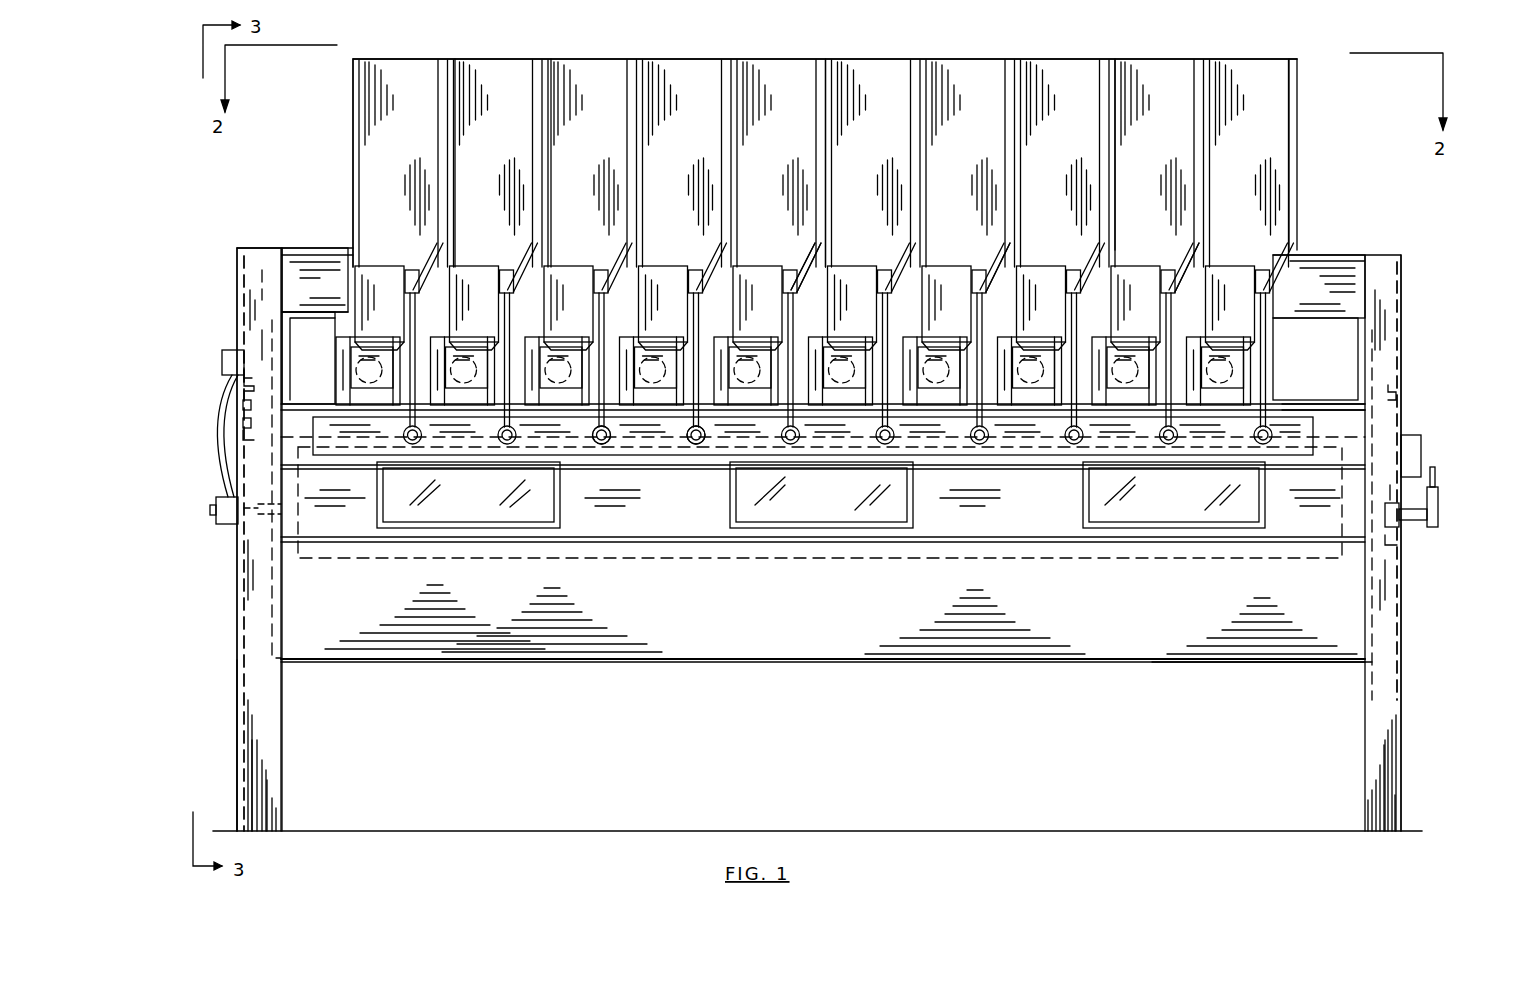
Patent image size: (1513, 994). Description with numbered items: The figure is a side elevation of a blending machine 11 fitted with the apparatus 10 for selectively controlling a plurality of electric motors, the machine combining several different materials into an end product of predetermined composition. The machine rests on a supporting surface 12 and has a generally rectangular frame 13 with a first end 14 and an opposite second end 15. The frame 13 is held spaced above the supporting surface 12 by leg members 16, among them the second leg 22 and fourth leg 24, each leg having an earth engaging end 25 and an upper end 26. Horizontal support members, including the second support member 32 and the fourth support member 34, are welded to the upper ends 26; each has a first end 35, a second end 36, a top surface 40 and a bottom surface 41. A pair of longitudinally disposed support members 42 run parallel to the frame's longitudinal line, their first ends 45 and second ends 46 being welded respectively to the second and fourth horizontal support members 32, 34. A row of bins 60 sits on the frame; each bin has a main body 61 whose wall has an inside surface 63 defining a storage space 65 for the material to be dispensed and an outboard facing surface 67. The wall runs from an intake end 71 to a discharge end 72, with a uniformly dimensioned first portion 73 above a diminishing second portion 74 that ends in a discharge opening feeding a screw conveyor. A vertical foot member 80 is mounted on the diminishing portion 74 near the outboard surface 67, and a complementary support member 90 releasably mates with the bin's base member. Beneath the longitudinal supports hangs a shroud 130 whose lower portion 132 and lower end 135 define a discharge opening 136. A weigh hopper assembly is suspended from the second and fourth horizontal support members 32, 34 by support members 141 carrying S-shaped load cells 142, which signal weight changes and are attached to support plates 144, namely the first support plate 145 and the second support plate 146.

The apparatus for selectively controlling a plurality of electric motors 10 is at (775, 52).
The blending machine 11 is at (222, 355).
The supporting surface 12 is at (750, 830).
The frame 13 is at (270, 235).
The first end 14 is at (239, 289).
The second end 15 is at (1403, 302).
The leg members 16 is at (233, 690).
The second leg 22 is at (258, 728).
The fourth leg 24 is at (1386, 758).
The first or earth engaging end 25 is at (250, 795).
The second or upper end 26 is at (258, 272).
The second support member 32 is at (262, 305).
The fourth support member 34 is at (1403, 324).
The first end 35 is at (1335, 402).
The second end 36 is at (293, 398).
The top surface 40 is at (262, 248).
The bottom surface 41 is at (258, 372).
The longitudinally disposed support members 42 is at (333, 250).
The first end 45 is at (315, 289).
The second end 46 is at (1319, 286).
The bins 60 is at (510, 50).
The main body 61 is at (353, 105).
The inside surface 63 is at (455, 188).
The storage space 65 is at (625, 185).
The outboard facing surface 67 is at (854, 163).
The first or intake end 71 is at (1255, 61).
The second or discharge end 72 is at (806, 272).
The first portion 73 is at (1130, 98).
The second portion 74 is at (996, 268).
The foot member 80 is at (718, 290).
The support member 90 is at (652, 395).
The shroud 130 is at (660, 618).
The lower portion 132 is at (826, 533).
The lower end 135 is at (823, 639).
The discharge opening 136 is at (855, 668).
The support members 141 is at (250, 395).
The load cells 142 is at (250, 418).
The support plates 144 is at (252, 455).
The first support plate 145 is at (240, 530).
The second support plate 146 is at (1421, 485).